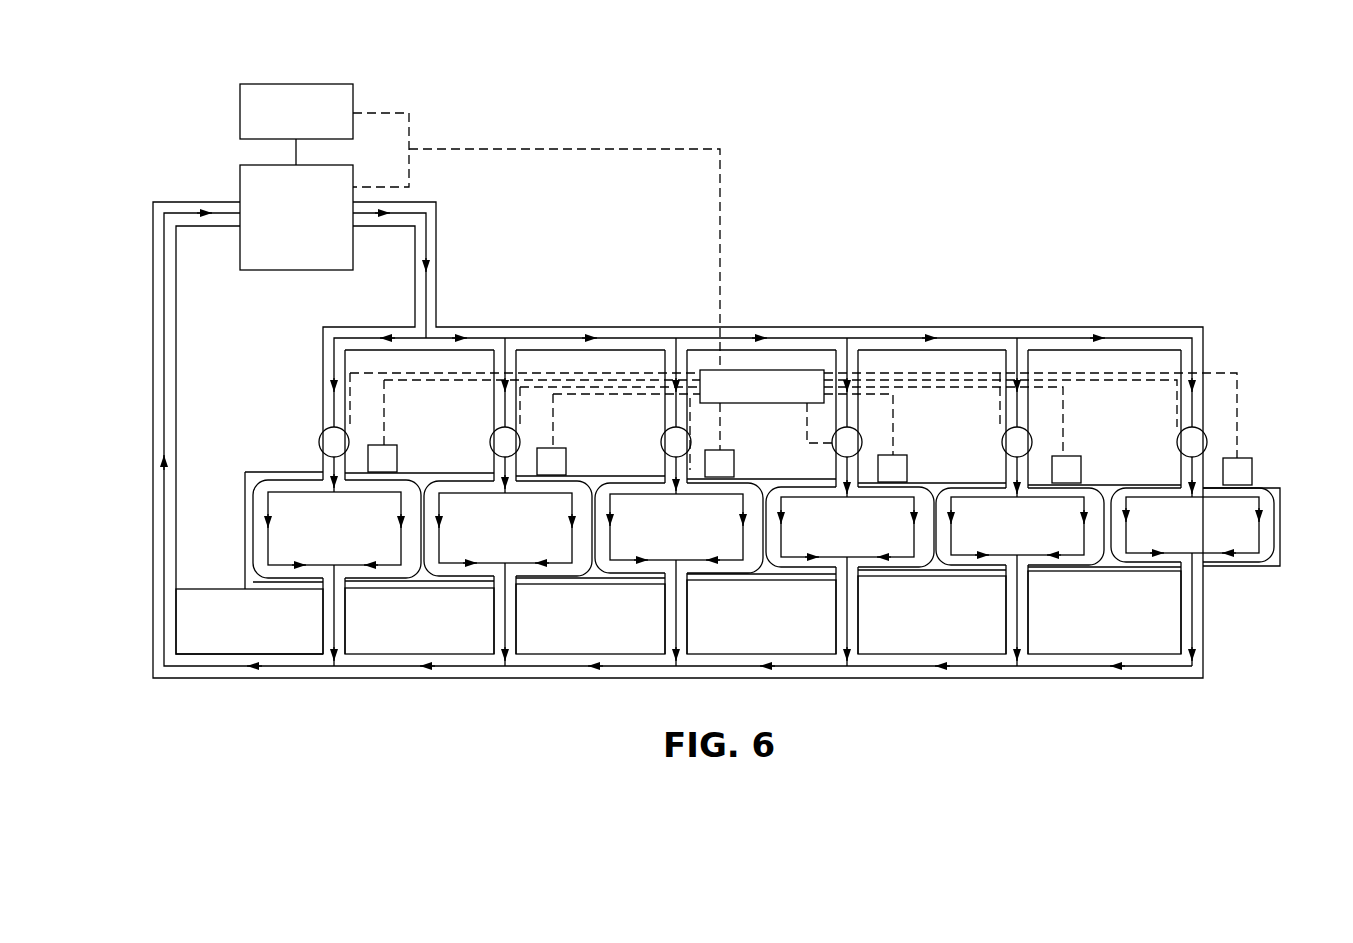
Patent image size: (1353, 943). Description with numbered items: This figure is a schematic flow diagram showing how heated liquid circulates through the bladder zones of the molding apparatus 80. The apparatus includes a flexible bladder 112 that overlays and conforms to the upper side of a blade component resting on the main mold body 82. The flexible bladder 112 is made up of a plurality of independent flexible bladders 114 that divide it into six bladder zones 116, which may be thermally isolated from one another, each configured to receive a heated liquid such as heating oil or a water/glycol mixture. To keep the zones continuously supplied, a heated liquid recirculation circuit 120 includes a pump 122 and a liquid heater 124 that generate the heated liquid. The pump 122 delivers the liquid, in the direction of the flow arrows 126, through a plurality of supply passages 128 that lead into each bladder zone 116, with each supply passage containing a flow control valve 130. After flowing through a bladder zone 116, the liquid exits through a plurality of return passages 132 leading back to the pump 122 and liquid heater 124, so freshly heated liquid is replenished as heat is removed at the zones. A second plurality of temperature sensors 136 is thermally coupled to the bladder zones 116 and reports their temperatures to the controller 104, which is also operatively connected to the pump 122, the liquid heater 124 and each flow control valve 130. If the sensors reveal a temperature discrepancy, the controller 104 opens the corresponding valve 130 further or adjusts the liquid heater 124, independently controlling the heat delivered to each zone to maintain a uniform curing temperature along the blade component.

The molding apparatus 80 is at (1093, 248).
The main mold body 82 is at (1241, 576).
The controller 104 is at (805, 370).
The flexible bladder 112 is at (1273, 561).
The independent flexible bladder 114 is at (255, 583).
The bladder zone 116 is at (322, 534).
The heated liquid recirculation circuit 120 is at (181, 350).
The pump 122 is at (355, 99).
The liquid heater 124 is at (240, 177).
The flow arrows 126 is at (437, 241).
The supply passages 128 is at (606, 327).
The flow control valve 130 is at (319, 442).
The return passages 132 is at (558, 679).
The temperature sensor 136 is at (397, 460).